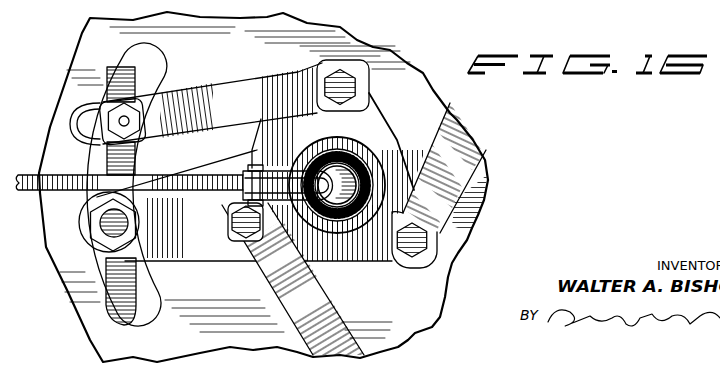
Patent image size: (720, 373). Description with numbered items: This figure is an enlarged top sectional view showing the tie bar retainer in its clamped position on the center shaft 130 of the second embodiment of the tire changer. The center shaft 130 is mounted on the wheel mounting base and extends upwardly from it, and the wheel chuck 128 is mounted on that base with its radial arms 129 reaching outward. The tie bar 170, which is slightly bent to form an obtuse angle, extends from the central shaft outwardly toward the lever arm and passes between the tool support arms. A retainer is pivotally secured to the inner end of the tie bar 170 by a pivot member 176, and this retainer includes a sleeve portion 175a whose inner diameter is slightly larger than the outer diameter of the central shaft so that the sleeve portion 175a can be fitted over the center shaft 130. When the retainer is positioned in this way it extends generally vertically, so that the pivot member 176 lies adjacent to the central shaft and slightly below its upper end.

The wheel chuck 128 is at (243, 62).
The radial arms 129 is at (486, 200).
The center shaft 130 is at (353, 177).
The tie bar 170 is at (20, 191).
The sleeve portion 175a is at (346, 202).
The pivot member 176 is at (248, 153).